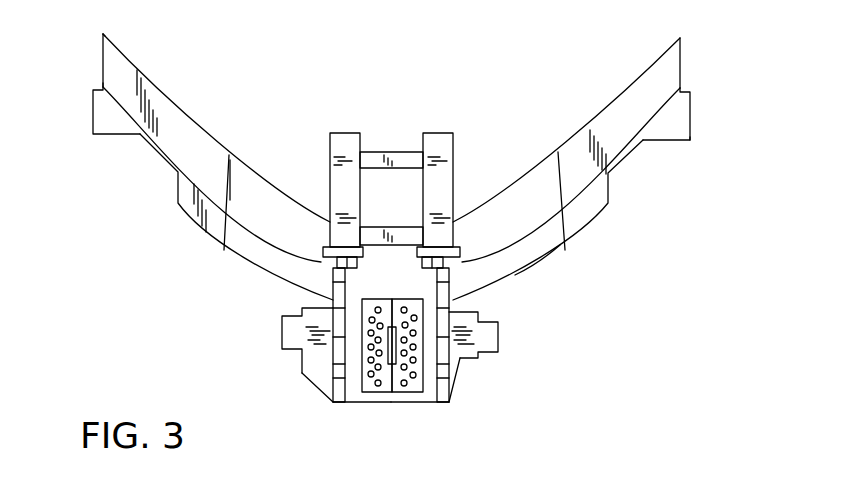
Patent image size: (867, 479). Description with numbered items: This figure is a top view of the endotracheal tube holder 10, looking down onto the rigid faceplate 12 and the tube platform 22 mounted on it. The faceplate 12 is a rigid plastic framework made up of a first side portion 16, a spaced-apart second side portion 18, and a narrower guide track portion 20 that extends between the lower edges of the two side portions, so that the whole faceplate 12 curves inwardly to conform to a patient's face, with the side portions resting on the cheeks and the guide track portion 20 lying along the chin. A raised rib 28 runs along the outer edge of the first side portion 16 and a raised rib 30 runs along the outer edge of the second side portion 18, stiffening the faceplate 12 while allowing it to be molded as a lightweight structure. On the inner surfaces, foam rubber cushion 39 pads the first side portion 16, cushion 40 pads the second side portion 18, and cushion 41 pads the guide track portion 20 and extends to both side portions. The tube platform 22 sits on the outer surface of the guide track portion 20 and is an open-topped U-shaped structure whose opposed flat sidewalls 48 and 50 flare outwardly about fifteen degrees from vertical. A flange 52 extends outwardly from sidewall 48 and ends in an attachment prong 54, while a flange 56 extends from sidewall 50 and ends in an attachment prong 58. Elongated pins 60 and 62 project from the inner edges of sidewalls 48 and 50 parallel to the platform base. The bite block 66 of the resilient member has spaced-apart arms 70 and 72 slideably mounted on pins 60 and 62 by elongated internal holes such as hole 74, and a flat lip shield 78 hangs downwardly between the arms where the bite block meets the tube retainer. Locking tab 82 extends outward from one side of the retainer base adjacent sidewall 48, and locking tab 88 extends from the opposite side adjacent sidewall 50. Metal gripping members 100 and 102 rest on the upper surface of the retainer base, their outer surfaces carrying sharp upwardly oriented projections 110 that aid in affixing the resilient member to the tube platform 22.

The endotracheal tube holder 10 is at (541, 104).
The faceplate 12 is at (593, 218).
The first side portion 16 is at (138, 138).
The second side portion 18 is at (691, 92).
The guide track portion 20 is at (550, 255).
The tube platform 22 is at (497, 378).
The raised rib 28 is at (93, 134).
The raised rib 30 is at (690, 140).
The cushion 39 is at (157, 83).
The cushion 40 is at (611, 100).
The cushion 41 is at (278, 193).
The sidewall 48 is at (332, 403).
The sidewall 50 is at (442, 403).
The flange 52 is at (302, 373).
The attachment prong 54 is at (282, 330).
The flange 56 is at (477, 359).
The attachment prong 58 is at (498, 330).
The elongated pin 60 is at (323, 265).
The elongated pin 62 is at (463, 265).
The bite block 66 is at (467, 153).
The arm 70 is at (345, 133).
The arm 72 is at (441, 133).
The hole 74 is at (395, 152).
The lip shield 78 is at (460, 252).
The locking tab 82 is at (338, 346).
The locking tab 88 is at (445, 342).
The gripping member 100 is at (367, 388).
The gripping member 102 is at (408, 394).
The projections 110 is at (383, 393).